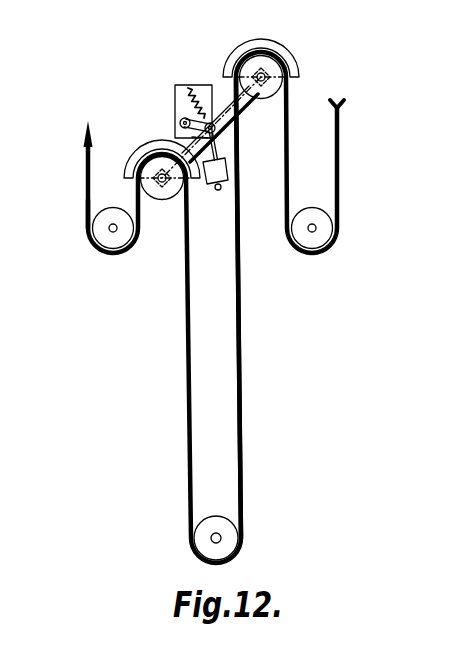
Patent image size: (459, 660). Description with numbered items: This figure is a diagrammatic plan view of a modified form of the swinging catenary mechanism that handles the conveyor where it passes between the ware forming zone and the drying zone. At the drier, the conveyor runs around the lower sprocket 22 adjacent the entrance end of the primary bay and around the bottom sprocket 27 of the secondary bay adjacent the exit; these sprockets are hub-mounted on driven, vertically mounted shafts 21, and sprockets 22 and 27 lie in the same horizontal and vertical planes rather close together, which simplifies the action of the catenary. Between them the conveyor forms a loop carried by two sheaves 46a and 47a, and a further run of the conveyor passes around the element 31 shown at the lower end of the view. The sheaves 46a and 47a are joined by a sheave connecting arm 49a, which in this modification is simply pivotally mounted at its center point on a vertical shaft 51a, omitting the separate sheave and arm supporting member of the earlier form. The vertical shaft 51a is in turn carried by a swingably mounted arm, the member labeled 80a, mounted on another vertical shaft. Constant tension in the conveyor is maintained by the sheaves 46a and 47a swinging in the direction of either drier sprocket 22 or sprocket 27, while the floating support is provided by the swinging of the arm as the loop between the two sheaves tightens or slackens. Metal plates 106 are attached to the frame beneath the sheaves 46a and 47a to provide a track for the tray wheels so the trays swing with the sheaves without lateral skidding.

The vertically mounted shaft 21 is at (108, 228).
The lower sprocket 22 is at (100, 238).
The bottom sprocket 27 is at (324, 241).
The lower tension roller 31 is at (231, 537).
The sheave 46a is at (165, 198).
The sheave 47a is at (278, 97).
The sheave connecting arm 49a is at (227, 108).
The vertical shaft 51a is at (238, 129).
The spring-loaded tensioning device 80a is at (196, 118).
The metal plate 106 is at (265, 45).